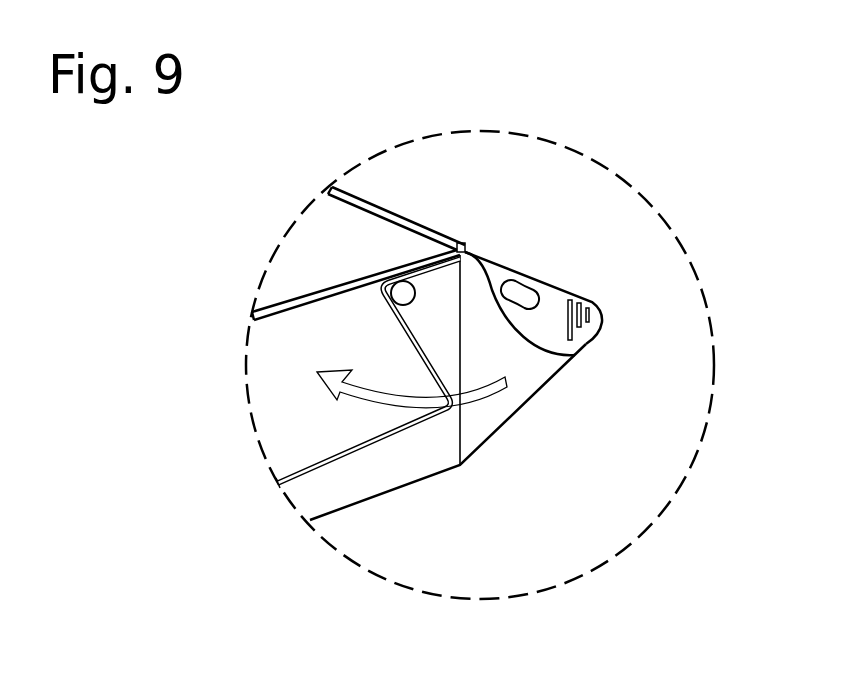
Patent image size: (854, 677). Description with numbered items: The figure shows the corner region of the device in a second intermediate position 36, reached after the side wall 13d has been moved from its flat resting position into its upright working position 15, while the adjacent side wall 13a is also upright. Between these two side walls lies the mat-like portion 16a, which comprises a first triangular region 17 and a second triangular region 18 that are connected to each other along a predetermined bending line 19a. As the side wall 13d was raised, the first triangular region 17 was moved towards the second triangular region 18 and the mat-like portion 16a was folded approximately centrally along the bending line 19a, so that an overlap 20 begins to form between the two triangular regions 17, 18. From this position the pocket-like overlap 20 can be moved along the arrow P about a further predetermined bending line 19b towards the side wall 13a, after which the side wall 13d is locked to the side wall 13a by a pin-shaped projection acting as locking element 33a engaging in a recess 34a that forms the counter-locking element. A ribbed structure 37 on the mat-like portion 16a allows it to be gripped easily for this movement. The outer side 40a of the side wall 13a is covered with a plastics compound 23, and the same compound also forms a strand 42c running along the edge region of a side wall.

The side wall 13a is at (312, 418).
The side wall 13d is at (340, 232).
The working position 15 is at (402, 188).
The mat-like portion 16a is at (557, 270).
The first triangular region 17 is at (562, 307).
The second triangular region 18 is at (527, 370).
The predetermined bending line 19a is at (515, 422).
The predetermined bending line 19b is at (418, 275).
The overlap 20 is at (503, 262).
The plastics compound 23 is at (355, 477).
The locking element 33a is at (410, 290).
The recess 34a is at (525, 293).
The second intermediate position 36 is at (465, 190).
The ribbed structure 37 is at (588, 321).
The outer side 40a is at (293, 386).
The strand 42c is at (397, 467).
The arrow P is at (378, 395).